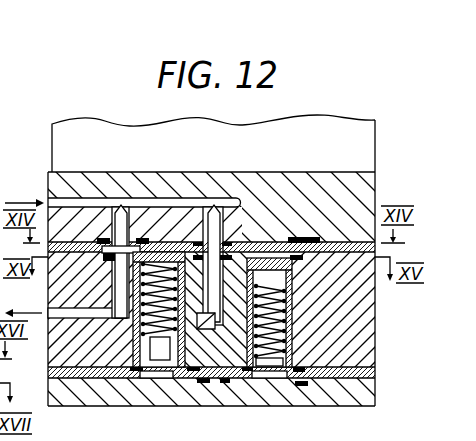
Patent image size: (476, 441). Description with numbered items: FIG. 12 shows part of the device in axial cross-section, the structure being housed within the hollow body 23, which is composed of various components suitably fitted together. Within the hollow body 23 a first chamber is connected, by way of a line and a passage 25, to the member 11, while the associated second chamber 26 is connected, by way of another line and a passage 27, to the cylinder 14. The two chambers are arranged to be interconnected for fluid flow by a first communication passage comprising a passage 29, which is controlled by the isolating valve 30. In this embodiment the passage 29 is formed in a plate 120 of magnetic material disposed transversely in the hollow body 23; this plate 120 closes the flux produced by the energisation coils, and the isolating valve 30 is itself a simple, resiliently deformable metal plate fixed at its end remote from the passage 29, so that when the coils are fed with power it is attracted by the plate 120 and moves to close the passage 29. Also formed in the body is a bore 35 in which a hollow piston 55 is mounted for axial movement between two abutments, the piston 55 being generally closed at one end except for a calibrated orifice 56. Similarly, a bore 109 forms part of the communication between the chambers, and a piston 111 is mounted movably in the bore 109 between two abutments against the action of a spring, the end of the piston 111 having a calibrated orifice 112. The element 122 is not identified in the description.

The hollow body 23 is at (50, 127).
The passage 25 is at (113, 197).
The isolating valve 30 is at (190, 197).
The slide plate 122 is at (97, 234).
The second chamber 26 is at (200, 240).
The passage 29 is at (110, 268).
The passage 27 is at (82, 317).
The bore 109 is at (133, 333).
The calibrated orifice 112 is at (198, 316).
The piston 111 is at (192, 330).
The calibrated orifice 56 is at (289, 272).
The piston 55 is at (296, 303).
The bore 35 is at (293, 331).
The plate 120 is at (320, 328).
The member 11 is at (22, 194).
The cylinder 14 is at (21, 306).